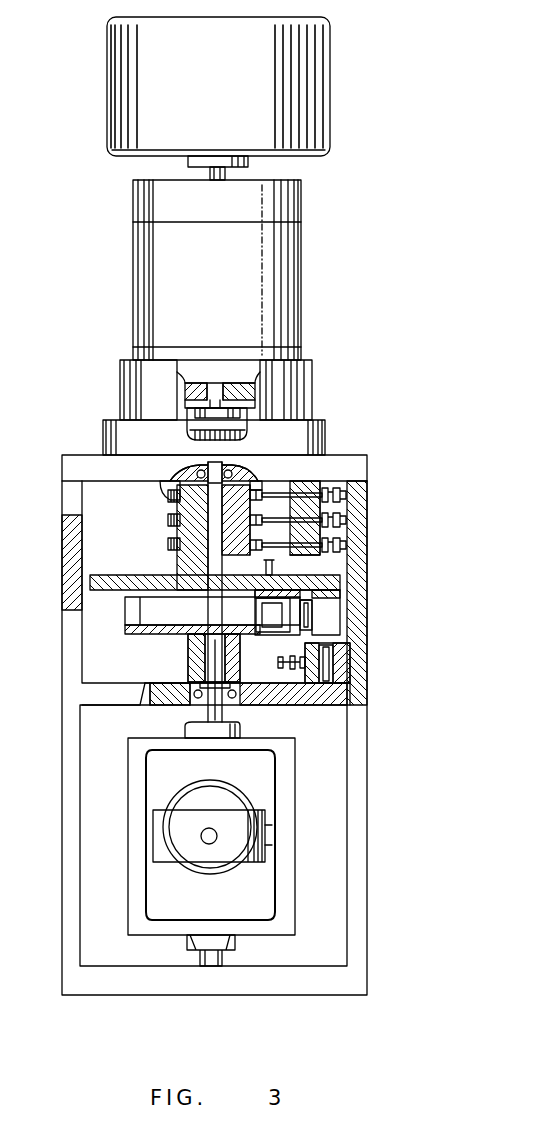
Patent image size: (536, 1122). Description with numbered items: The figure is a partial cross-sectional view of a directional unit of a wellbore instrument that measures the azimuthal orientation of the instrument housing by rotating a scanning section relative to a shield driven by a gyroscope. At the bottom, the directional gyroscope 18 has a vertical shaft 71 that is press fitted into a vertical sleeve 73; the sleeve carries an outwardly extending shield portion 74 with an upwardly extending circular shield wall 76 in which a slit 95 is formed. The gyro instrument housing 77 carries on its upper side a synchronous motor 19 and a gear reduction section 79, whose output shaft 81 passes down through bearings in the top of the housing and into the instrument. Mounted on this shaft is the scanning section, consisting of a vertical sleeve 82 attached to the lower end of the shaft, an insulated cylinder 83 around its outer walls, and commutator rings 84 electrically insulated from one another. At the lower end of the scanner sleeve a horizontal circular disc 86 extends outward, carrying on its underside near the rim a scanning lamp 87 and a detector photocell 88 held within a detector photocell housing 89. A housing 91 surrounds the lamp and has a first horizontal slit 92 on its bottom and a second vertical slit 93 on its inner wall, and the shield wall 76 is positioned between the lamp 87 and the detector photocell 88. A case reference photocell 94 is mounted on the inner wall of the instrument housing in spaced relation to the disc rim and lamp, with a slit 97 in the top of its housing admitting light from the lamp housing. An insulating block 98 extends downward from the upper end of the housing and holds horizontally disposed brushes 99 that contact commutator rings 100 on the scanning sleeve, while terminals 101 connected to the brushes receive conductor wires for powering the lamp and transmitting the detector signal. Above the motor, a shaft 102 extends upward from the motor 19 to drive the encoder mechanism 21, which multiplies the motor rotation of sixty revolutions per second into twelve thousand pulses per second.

The directional gyroscope 18 is at (300, 825).
The synchronous motor 19 is at (301, 246).
The encoder mechanism 21 is at (330, 100).
The vertical shaft 71 is at (205, 714).
The vertical sleeve 73 is at (188, 660).
The shield portion 74 is at (140, 633).
The circular shield wall 76 is at (125, 606).
The gyro instrument housing 77 is at (368, 472).
The gear reduction section 79 is at (310, 362).
The output shaft 81 is at (170, 484).
The vertical sleeve 82 is at (167, 544).
The insulated cylinder 83 is at (167, 494).
The commutator rings 84 is at (167, 518).
The circular disc 86 is at (110, 575).
The scanning lamp 87 is at (315, 617).
The detector photocell 88 is at (343, 595).
The detector photocell housing 89 is at (352, 553).
The lamp housing 91 is at (318, 622).
The first horizontal slit 92 is at (352, 660).
The second vertical slit 93 is at (280, 652).
The case reference photocell 94 is at (368, 714).
The slit 95 is at (82, 592).
The slit 97 is at (345, 675).
The insulating block 98 is at (348, 500).
The brushes 99 is at (280, 486).
The commutator rings 100 is at (260, 480).
The terminals 101 is at (356, 524).
The shaft 102 is at (229, 178).